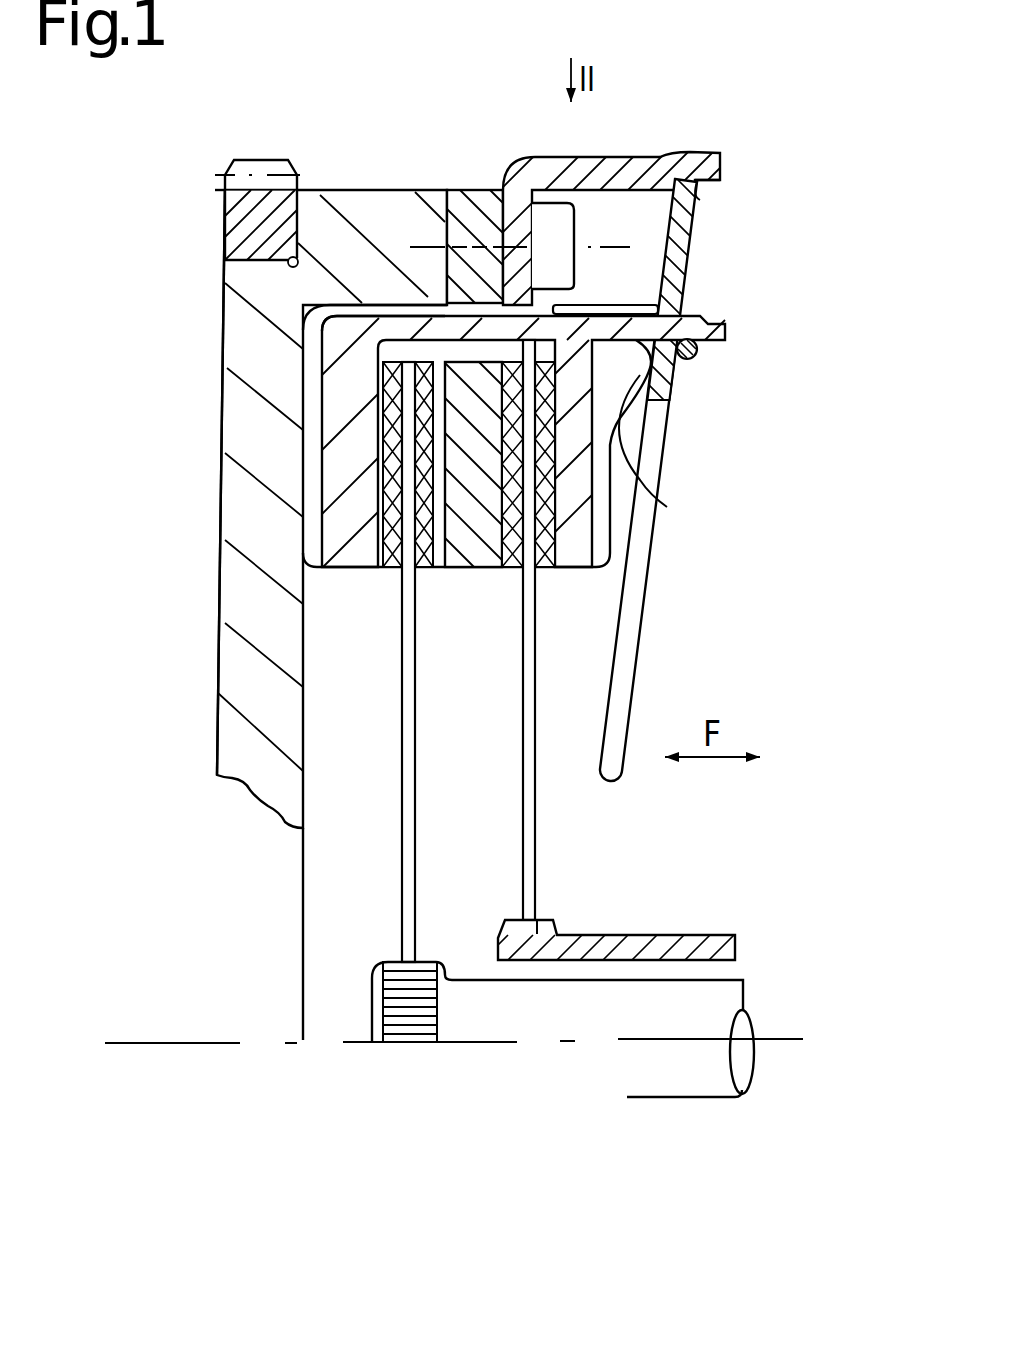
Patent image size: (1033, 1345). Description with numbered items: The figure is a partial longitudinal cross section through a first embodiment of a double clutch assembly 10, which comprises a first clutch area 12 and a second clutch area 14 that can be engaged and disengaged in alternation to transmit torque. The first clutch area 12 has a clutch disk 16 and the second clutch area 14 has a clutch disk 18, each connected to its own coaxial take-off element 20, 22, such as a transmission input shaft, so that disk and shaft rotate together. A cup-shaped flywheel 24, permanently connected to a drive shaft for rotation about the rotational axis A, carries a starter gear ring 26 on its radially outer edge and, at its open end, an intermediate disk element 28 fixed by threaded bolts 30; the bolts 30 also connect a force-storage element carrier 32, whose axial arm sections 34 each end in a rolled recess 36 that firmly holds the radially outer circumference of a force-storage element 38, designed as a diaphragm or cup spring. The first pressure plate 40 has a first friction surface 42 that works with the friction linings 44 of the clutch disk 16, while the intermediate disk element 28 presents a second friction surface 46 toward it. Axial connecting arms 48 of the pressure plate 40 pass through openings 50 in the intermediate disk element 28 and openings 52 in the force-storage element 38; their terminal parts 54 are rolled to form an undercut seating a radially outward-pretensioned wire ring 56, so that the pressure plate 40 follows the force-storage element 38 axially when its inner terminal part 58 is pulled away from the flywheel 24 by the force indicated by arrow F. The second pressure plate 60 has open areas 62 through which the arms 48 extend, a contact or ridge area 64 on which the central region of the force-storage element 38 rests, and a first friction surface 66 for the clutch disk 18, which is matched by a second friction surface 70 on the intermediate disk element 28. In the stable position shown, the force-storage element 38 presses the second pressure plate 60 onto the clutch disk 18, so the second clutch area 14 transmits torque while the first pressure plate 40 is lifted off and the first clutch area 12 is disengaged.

The double clutch assembly 10 is at (754, 149).
The first clutch area 12 is at (363, 595).
The second clutch area 14 is at (602, 602).
The clutch disk 16 is at (347, 778).
The clutch disk 18 is at (572, 725).
The take-off element 20 is at (685, 1080).
The take-off element 22 is at (710, 940).
The flywheel 24 is at (224, 483).
The starter gear ring 26 is at (260, 200).
The intermediate disk element 28 is at (474, 215).
The threaded bolts 30 is at (565, 238).
The force-storage element carrier 32 is at (643, 165).
The axial arm sections 34 is at (712, 178).
The recess 36 is at (692, 200).
The force-storage element 38 is at (655, 450).
The first pressure plate 40 is at (350, 375).
The first friction surface 42 is at (447, 505).
The friction linings 44 is at (400, 548).
The second friction surface 46 is at (440, 412).
The axial connecting arms 48 is at (660, 303).
The openings 50 is at (375, 333).
The openings 52 is at (668, 362).
The terminal parts 54 is at (727, 332).
The wire ring 56 is at (697, 353).
The inner terminal part 58 is at (625, 692).
The second pressure plate 60 is at (555, 547).
The open areas 62 is at (600, 297).
The contact or ridge area 64 is at (662, 503).
The first friction surface 66 is at (557, 567).
The second friction surface 70 is at (505, 512).
The rotational axis A is at (783, 1040).